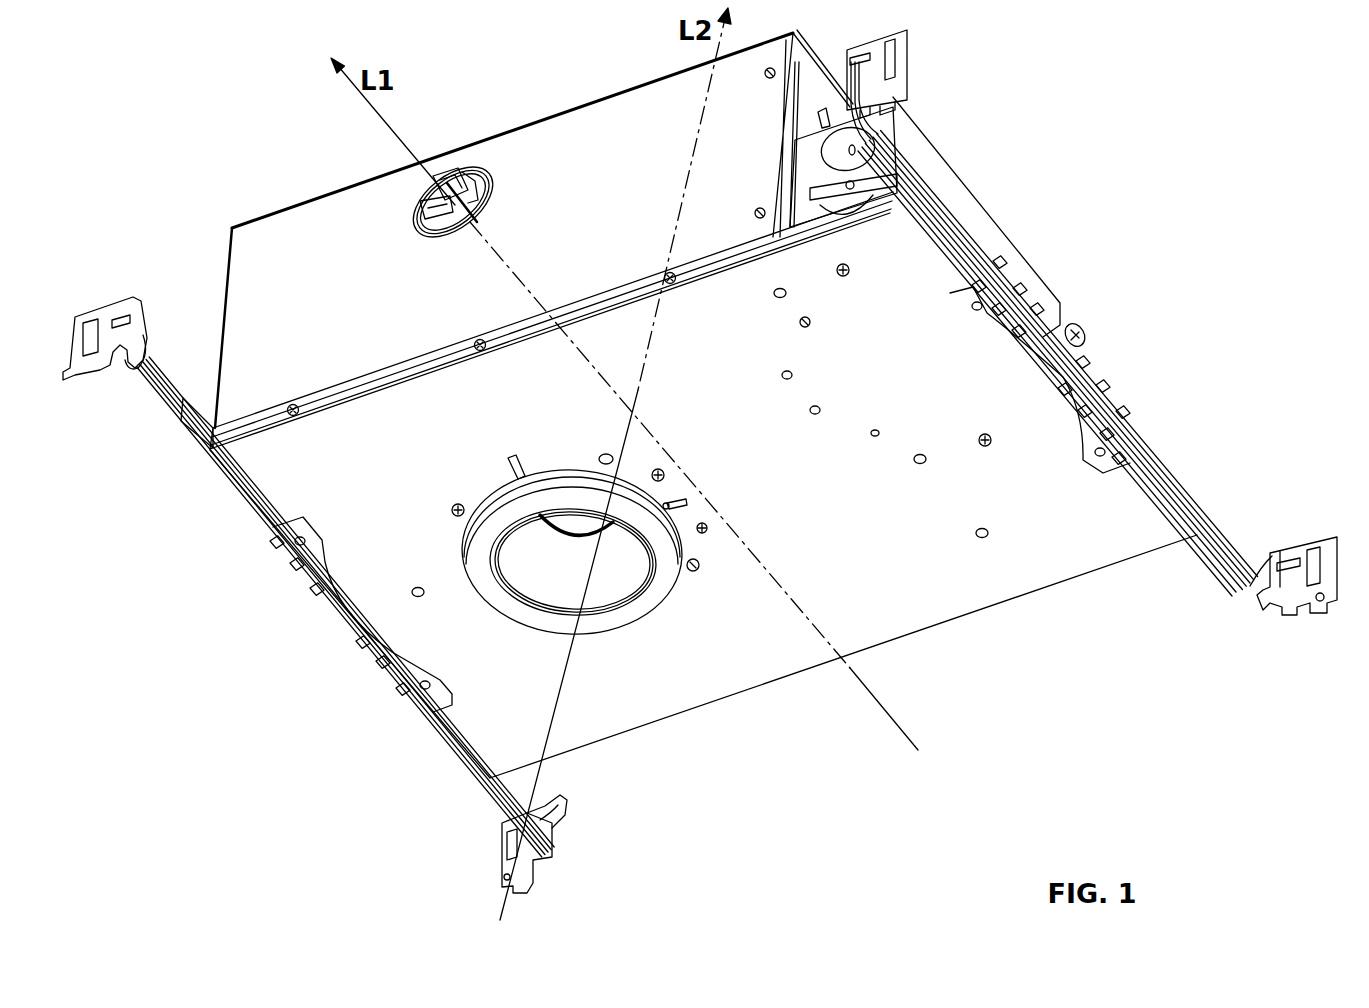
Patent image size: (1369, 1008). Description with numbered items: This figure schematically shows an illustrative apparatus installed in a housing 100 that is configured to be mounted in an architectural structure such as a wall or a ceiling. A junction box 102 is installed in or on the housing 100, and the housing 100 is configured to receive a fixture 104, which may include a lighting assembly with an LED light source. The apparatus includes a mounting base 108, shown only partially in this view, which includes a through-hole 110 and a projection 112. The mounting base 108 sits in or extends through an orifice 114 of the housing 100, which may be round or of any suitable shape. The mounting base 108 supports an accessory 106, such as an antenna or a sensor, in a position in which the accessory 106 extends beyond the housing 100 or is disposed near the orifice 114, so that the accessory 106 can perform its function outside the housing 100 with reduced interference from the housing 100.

The housing 100 is at (794, 66).
The junction box 102 is at (981, 200).
The fixture 104 is at (603, 535).
The accessory 106 is at (410, 193).
The mounting base 108 is at (461, 168).
The through-hole 110 is at (445, 230).
The projection 112 is at (490, 174).
The orifice 114 is at (410, 223).